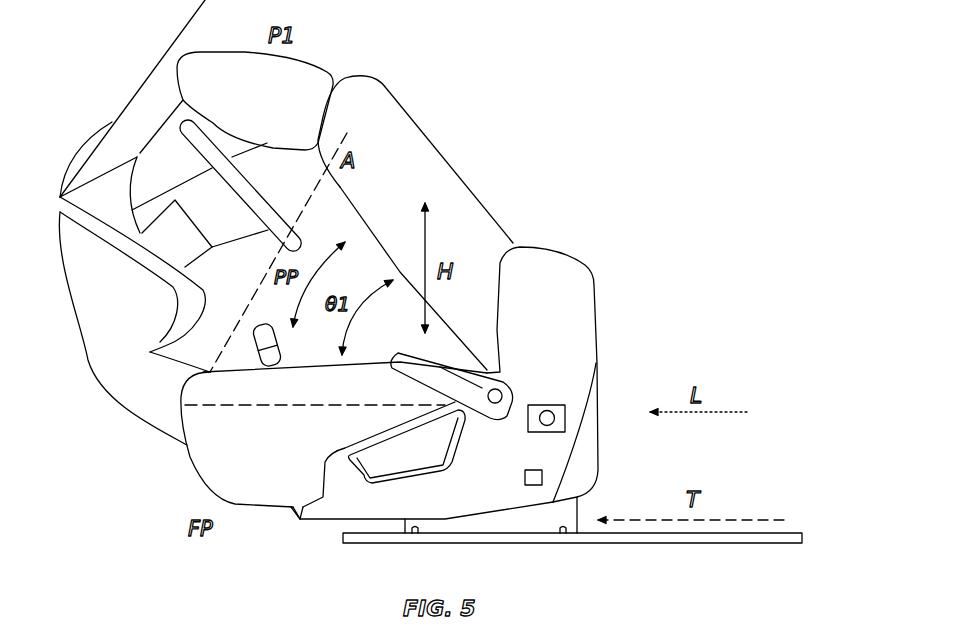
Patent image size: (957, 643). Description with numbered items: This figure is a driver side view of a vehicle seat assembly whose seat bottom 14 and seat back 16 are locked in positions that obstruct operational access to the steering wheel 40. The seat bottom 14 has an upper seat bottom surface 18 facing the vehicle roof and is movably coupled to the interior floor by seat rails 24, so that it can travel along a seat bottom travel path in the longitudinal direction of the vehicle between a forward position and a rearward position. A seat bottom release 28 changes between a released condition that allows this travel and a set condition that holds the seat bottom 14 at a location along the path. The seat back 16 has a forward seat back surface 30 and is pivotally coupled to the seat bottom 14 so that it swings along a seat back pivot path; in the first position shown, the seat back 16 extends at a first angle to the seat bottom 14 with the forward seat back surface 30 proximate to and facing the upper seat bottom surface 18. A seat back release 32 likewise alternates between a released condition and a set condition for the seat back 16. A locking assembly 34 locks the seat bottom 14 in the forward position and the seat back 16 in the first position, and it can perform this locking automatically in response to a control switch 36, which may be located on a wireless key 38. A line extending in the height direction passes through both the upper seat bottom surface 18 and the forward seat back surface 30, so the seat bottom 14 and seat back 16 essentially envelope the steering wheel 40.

The seat bottom 14 is at (182, 473).
The seat back 16 is at (463, 160).
The upper seat bottom surface 18 is at (297, 363).
The seat rails 24 is at (362, 542).
The seat bottom release 28 is at (293, 516).
The forward seat back surface 30 is at (385, 258).
The seat back release 32 is at (466, 392).
The locking assembly 34 is at (547, 405).
The control switch 36 is at (542, 477).
The wireless key 38 is at (559, 453).
The steering wheel 40 is at (252, 178).